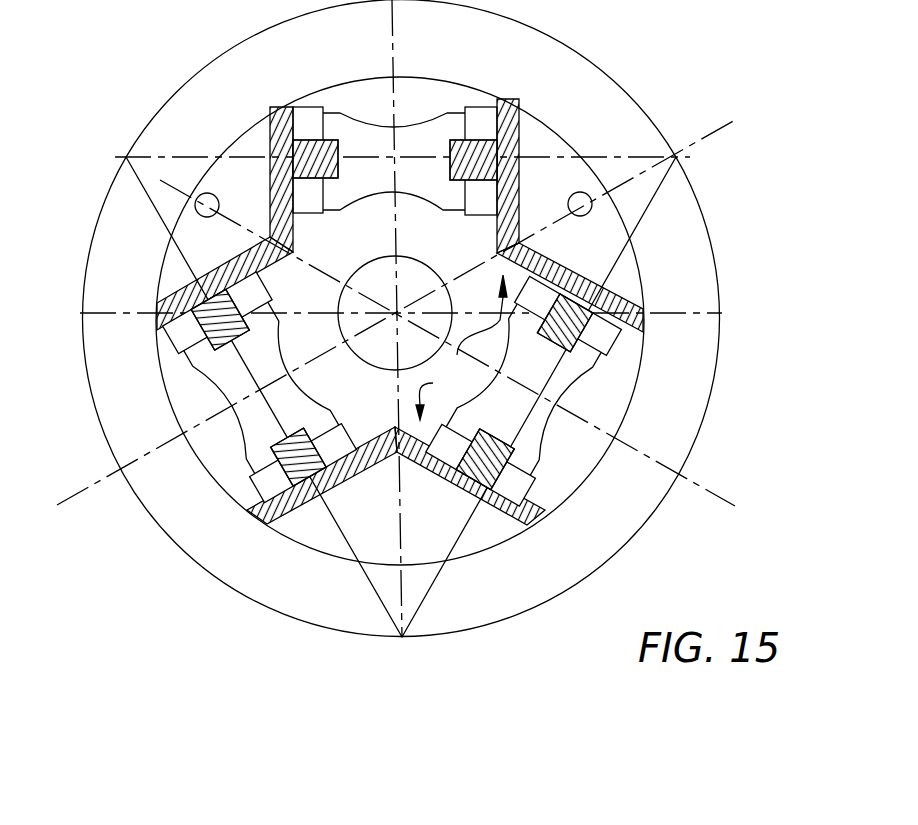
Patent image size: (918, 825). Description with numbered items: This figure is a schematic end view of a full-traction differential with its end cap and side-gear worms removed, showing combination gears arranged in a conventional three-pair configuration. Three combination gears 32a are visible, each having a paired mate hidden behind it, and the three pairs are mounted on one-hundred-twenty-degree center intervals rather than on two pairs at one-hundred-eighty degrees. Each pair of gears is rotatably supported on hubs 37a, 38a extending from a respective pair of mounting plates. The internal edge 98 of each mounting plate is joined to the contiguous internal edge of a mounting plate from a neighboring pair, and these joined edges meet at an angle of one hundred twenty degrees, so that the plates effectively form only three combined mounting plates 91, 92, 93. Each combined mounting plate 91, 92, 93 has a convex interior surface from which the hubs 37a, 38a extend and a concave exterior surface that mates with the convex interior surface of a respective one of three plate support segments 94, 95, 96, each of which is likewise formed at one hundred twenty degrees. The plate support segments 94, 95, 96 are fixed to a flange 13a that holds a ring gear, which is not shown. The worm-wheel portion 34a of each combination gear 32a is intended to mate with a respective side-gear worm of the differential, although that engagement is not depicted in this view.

The flange 13a is at (188, 512).
The combination gear 32a is at (433, 125).
The worm-wheel portion 34a is at (377, 195).
The hub 37a is at (305, 135).
The hub 38a is at (477, 137).
The combined mounting plate 91 is at (278, 173).
The combined mounting plate 92 is at (520, 177).
The combined mounting plate 93 is at (362, 470).
The plate support segment 94 is at (185, 265).
The plate support segment 95 is at (628, 268).
The plate support segment 96 is at (493, 520).
The internal edge 98 is at (461, 347).